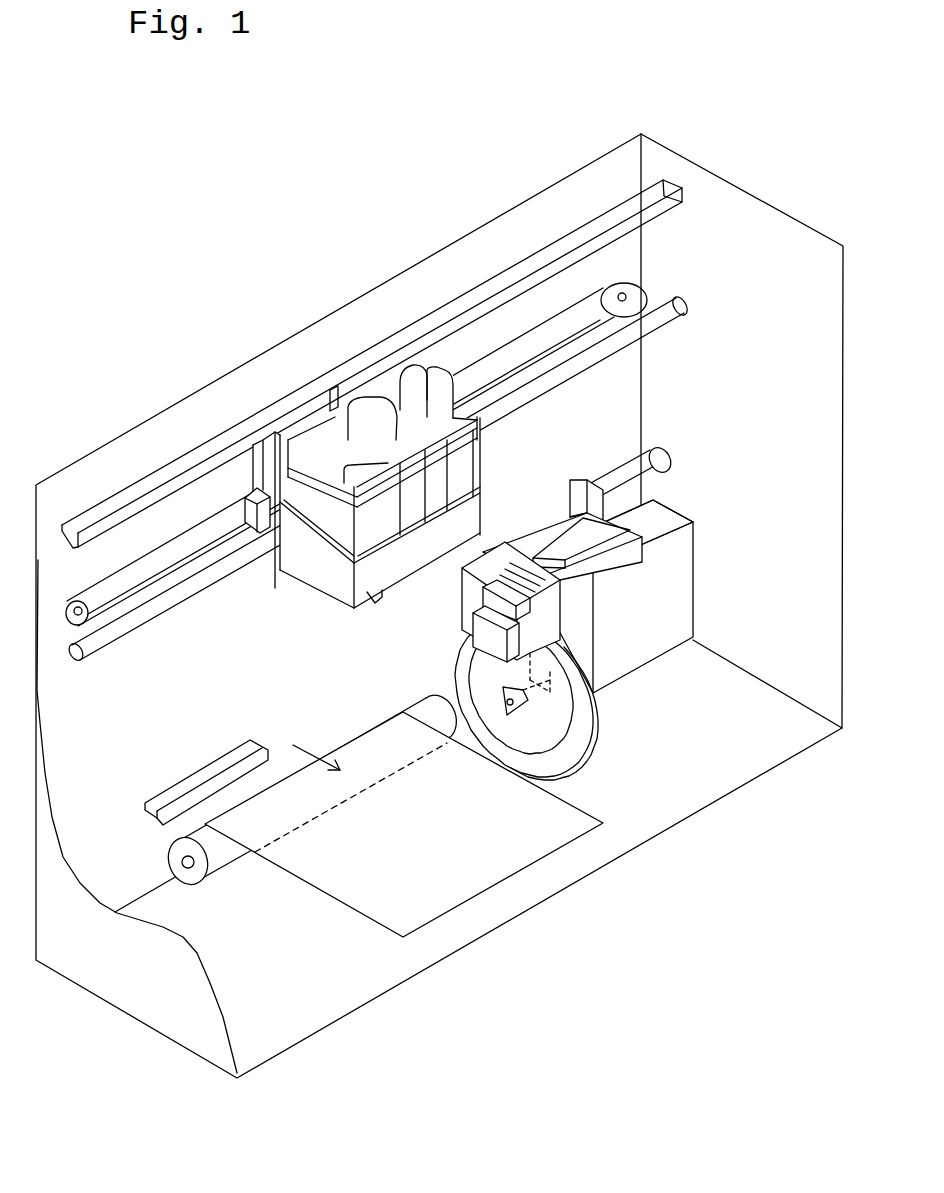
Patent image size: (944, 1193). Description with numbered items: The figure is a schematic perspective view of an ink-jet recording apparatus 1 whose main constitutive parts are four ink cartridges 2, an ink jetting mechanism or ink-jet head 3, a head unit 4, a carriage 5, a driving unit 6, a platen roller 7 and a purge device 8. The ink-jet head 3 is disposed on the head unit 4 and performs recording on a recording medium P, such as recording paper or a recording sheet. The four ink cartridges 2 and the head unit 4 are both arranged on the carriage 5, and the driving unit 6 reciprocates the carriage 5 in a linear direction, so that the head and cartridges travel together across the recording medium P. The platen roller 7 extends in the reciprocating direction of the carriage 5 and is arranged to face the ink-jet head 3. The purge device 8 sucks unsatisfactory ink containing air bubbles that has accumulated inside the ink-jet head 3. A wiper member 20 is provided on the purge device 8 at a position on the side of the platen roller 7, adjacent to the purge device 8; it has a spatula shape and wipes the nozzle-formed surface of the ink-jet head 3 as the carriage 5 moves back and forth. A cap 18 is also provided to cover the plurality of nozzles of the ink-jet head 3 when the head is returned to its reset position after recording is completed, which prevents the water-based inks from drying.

The ink-jet recording apparatus 1 is at (338, 165).
The ink cartridges 2 is at (377, 428).
The ink jetting mechanism (ink-jet head) 3 is at (422, 573).
The head unit 4 is at (400, 601).
The carriage 5 is at (264, 462).
The driving unit 6 is at (665, 163).
The platen roller 7 is at (225, 853).
The purge device 8 is at (755, 625).
The cap 18 is at (662, 512).
The wiper member 20 is at (497, 613).
The recording medium (recording paper or recording sheet) P is at (390, 909).